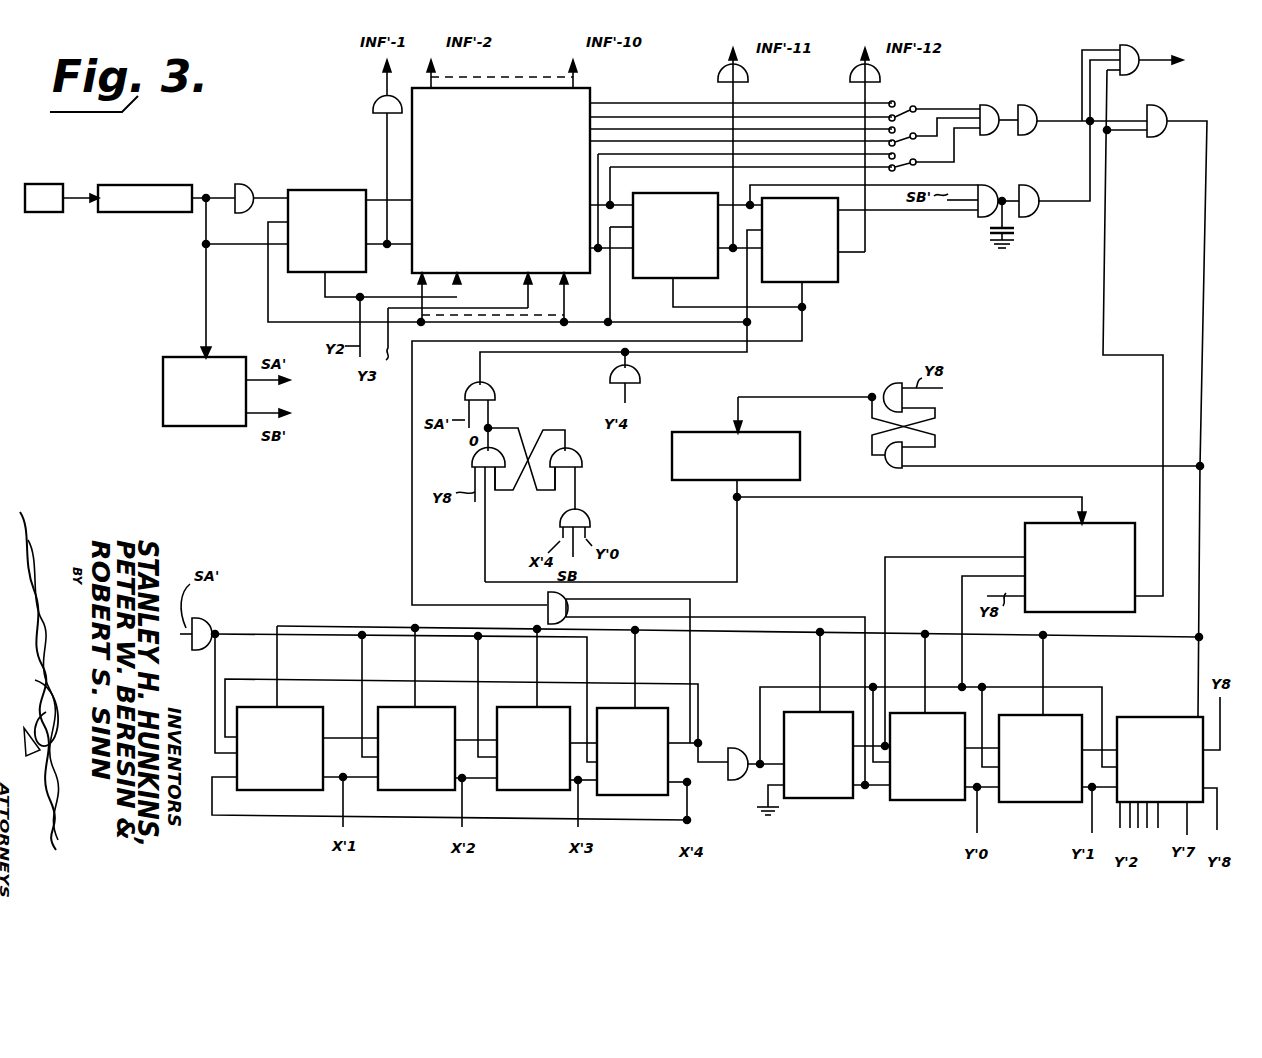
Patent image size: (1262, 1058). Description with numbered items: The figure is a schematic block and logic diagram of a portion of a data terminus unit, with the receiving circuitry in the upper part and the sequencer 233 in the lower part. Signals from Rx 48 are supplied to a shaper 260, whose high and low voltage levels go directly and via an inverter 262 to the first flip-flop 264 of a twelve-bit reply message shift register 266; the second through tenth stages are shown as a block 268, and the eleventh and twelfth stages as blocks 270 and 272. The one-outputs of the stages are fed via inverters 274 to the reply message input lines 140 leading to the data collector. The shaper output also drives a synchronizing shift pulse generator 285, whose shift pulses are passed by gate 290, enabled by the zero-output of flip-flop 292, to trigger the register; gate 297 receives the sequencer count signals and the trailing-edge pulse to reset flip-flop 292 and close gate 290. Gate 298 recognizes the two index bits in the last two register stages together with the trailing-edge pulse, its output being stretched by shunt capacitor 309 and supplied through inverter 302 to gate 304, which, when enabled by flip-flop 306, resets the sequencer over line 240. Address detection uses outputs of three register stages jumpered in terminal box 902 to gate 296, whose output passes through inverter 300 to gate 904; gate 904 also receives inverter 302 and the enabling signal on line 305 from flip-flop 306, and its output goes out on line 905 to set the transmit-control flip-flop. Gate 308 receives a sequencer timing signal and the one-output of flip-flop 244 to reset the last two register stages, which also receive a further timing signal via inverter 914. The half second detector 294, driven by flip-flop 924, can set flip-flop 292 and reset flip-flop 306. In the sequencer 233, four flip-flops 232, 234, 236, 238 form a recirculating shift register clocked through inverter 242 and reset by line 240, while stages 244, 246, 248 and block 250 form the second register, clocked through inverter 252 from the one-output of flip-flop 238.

The Rx 48 is at (60, 183).
The shaper 260 is at (120, 184).
The inverter 262 is at (258, 165).
The first flip-flop 264 is at (350, 190).
The reply message shift register 266 is at (380, 151).
The block 268 is at (501, 180).
The block 270 is at (660, 178).
The block 272 is at (838, 276).
The inverters 274 is at (372, 107).
The reply message input lines 140 is at (375, 85).
The synchronizing shift pulse generator 285 is at (163, 390).
The gate 290 is at (496, 392).
The flip-flop 292 is at (572, 452).
The half second detector circuit 294 is at (714, 408).
The gate 296 is at (986, 104).
The gate 297 is at (560, 521).
The gate 298 is at (980, 184).
The inverter 300 is at (1032, 112).
The inverter 302 is at (1036, 214).
The gate 304 is at (1166, 114).
The line 305 is at (1163, 410).
The flip-flop 306 is at (1094, 523).
The gate 308 is at (546, 600).
The shunt capacitor 309 is at (990, 231).
The terminal box 902 is at (906, 100).
The gate 904 is at (1130, 74).
The line 905 is at (1186, 60).
The inverter 914 is at (640, 376).
The flip-flop 924 is at (888, 472).
The first flip-flop 232 is at (266, 790).
The sequencer 233 is at (386, 624).
The second flip-flop 234 is at (428, 806).
The third flip-flop 236 is at (522, 790).
The fourth flip-flop 238 is at (628, 792).
The line 240 is at (748, 636).
The inverter 242 is at (200, 622).
The flip-flop stage 244 is at (850, 812).
The flip-flop stage 246 is at (910, 800).
The flip-flop stage 248 is at (1020, 802).
The block 250 is at (1166, 714).
The inverter 252 is at (740, 780).